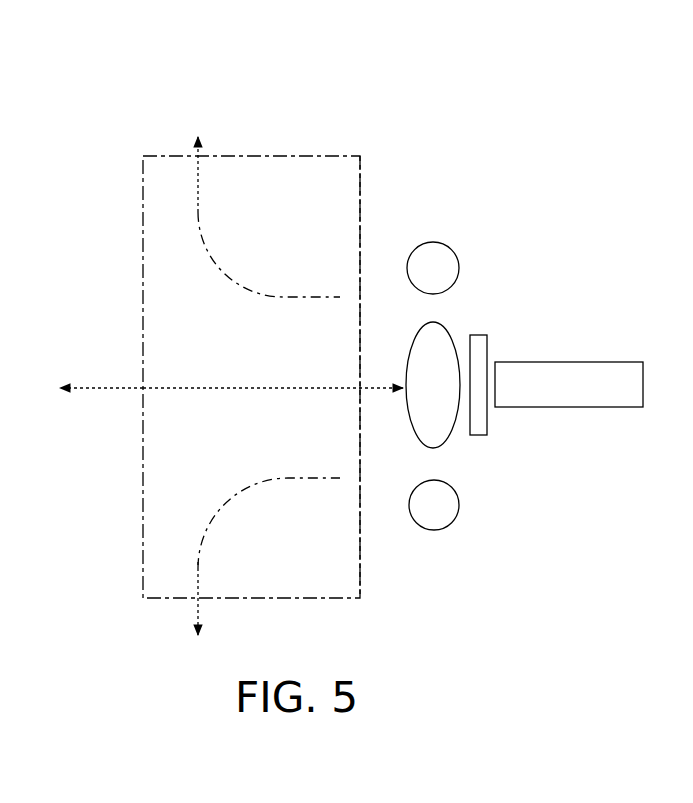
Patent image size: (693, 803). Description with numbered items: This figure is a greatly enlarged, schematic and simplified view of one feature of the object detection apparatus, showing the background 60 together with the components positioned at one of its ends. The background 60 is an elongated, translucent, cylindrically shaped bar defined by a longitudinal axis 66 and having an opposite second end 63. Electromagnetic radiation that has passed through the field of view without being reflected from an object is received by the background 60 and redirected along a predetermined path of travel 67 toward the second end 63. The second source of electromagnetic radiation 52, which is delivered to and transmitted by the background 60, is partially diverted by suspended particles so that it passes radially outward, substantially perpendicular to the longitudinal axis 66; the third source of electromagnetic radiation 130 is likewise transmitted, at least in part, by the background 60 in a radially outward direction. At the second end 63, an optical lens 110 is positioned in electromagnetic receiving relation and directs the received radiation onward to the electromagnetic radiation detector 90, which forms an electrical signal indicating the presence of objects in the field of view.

The background 60 is at (306, 128).
The second end 63 is at (364, 180).
The longitudinal axis 66 is at (86, 385).
The predetermined path of travel 67 is at (230, 385).
The third source of electromagnetic radiation 130 is at (213, 252).
The second source of electromagnetic radiation 52 is at (441, 250).
The optical lens 110 is at (438, 340).
The electromagnetic radiation detector 90 is at (578, 370).